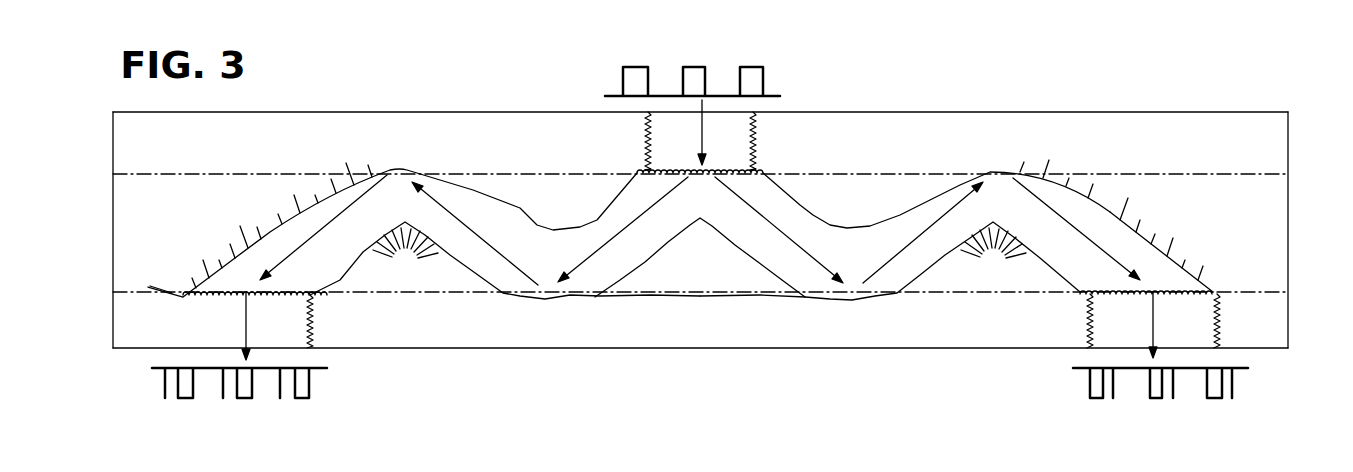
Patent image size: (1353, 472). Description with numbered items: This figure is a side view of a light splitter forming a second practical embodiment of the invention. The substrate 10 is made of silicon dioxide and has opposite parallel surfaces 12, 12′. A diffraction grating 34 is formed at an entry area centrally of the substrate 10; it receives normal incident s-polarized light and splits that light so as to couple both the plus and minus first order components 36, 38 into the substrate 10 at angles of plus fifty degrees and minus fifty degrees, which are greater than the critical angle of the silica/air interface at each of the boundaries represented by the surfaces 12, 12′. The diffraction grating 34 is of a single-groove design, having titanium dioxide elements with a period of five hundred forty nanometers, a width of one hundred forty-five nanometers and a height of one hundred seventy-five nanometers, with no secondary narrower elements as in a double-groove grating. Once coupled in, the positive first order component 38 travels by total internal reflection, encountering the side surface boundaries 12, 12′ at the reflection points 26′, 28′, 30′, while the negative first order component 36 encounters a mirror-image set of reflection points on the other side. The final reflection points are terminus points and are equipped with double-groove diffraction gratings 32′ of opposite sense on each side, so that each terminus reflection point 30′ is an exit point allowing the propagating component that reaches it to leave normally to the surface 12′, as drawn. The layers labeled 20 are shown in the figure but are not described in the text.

The substrate 10 is at (1290, 203).
The surface 12 is at (882, 173).
The surface 12′ is at (712, 293).
The cladding layer 20 is at (1290, 147).
The reflection point 26′ is at (852, 299).
The reflection point 28′ is at (1002, 165).
The terminus reflection point 30′ is at (1215, 283).
The double-groove diffraction grating 32′ is at (1112, 296).
The diffraction grating 34 is at (738, 171).
The negative first order component 36 is at (625, 226).
The positive first order component 38 is at (785, 228).